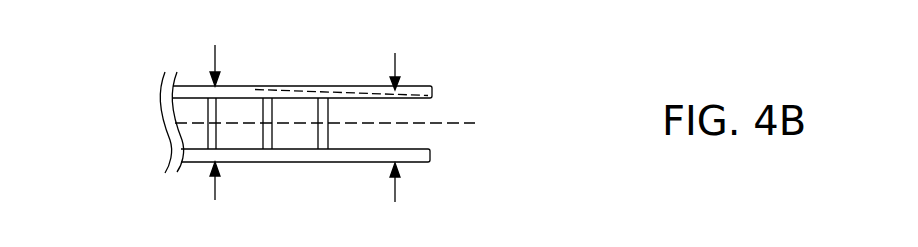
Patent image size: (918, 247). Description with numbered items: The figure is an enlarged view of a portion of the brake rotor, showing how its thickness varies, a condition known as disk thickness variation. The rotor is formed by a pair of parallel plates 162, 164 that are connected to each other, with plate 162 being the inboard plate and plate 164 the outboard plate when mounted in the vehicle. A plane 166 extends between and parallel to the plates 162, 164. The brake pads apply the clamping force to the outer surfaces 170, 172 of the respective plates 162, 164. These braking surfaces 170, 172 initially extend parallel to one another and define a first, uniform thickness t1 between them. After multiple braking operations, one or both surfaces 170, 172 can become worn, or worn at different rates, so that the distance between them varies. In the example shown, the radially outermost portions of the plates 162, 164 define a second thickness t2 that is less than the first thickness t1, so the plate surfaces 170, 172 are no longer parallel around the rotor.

The plate 162 is at (430, 152).
The plate 164 is at (263, 91).
The plane 166 is at (475, 123).
The outer surface 170 is at (305, 162).
The outer surface 172 is at (386, 86).
The first thickness t1 is at (212, 188).
The second thickness t2 is at (397, 187).